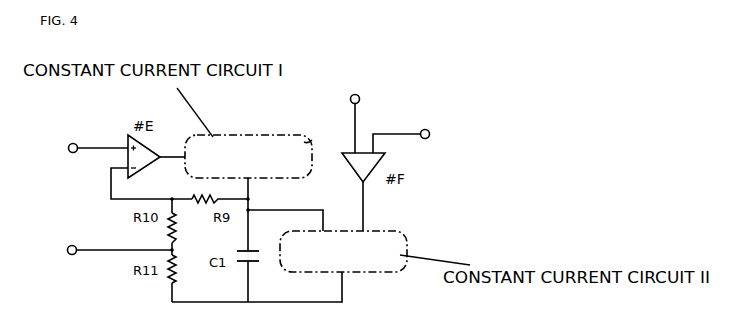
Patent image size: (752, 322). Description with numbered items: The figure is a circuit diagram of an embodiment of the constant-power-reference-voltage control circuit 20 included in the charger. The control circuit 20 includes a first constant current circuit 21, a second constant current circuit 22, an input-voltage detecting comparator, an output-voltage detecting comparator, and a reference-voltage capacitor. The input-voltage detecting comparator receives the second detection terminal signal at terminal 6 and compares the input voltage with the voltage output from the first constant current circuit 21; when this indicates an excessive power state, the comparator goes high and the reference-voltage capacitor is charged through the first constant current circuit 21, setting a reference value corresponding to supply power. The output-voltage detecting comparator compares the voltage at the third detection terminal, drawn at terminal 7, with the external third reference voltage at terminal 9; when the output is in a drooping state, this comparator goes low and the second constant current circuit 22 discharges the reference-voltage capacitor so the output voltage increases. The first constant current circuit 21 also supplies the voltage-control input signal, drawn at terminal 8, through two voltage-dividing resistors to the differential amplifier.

The sense terminal SENS2 6 is at (64, 144).
The sense terminal SENS3 7 is at (356, 76).
The set voltage terminal Vset 8 is at (90, 248).
The reference terminal Ref3 9 is at (452, 131).
The constant-power-reference-voltage control circuit 20 is at (250, 118).
The constant current circuit 21 is at (304, 142).
The constant current circuit 22 is at (383, 265).